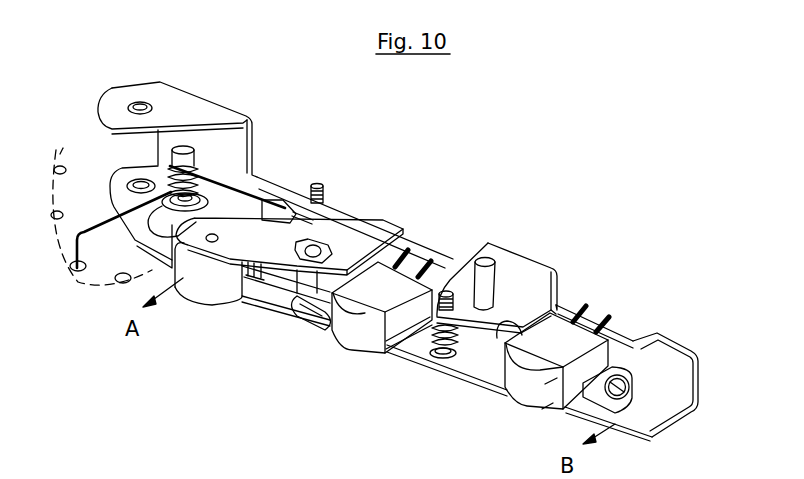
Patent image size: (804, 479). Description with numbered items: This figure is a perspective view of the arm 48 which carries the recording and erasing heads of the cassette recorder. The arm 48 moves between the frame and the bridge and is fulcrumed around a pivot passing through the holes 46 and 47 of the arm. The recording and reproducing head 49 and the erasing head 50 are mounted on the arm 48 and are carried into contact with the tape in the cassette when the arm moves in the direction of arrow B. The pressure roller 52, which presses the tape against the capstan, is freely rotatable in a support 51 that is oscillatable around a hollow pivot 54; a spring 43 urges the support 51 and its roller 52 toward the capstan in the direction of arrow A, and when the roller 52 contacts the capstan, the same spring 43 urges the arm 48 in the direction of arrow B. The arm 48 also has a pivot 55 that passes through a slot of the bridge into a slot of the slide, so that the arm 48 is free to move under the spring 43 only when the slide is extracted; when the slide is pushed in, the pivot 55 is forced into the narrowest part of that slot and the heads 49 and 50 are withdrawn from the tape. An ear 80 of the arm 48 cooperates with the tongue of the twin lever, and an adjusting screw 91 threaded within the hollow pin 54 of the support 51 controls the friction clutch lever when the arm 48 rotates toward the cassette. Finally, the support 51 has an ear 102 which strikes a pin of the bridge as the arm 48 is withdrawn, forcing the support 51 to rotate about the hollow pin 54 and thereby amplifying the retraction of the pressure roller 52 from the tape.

The spring 43 is at (97, 232).
The hole 46 is at (133, 104).
The hole 47 is at (132, 184).
The arm 48 is at (242, 152).
The recording and reproducing head 49 is at (372, 343).
The erasing head 50 is at (520, 381).
The support 51 is at (272, 250).
The pressure roller 52 is at (215, 290).
The hollow pivot 54 is at (310, 300).
The pivot 55 is at (493, 272).
The ear 80 is at (661, 352).
The adjusting screw 91 is at (325, 178).
The ear 102 is at (402, 228).